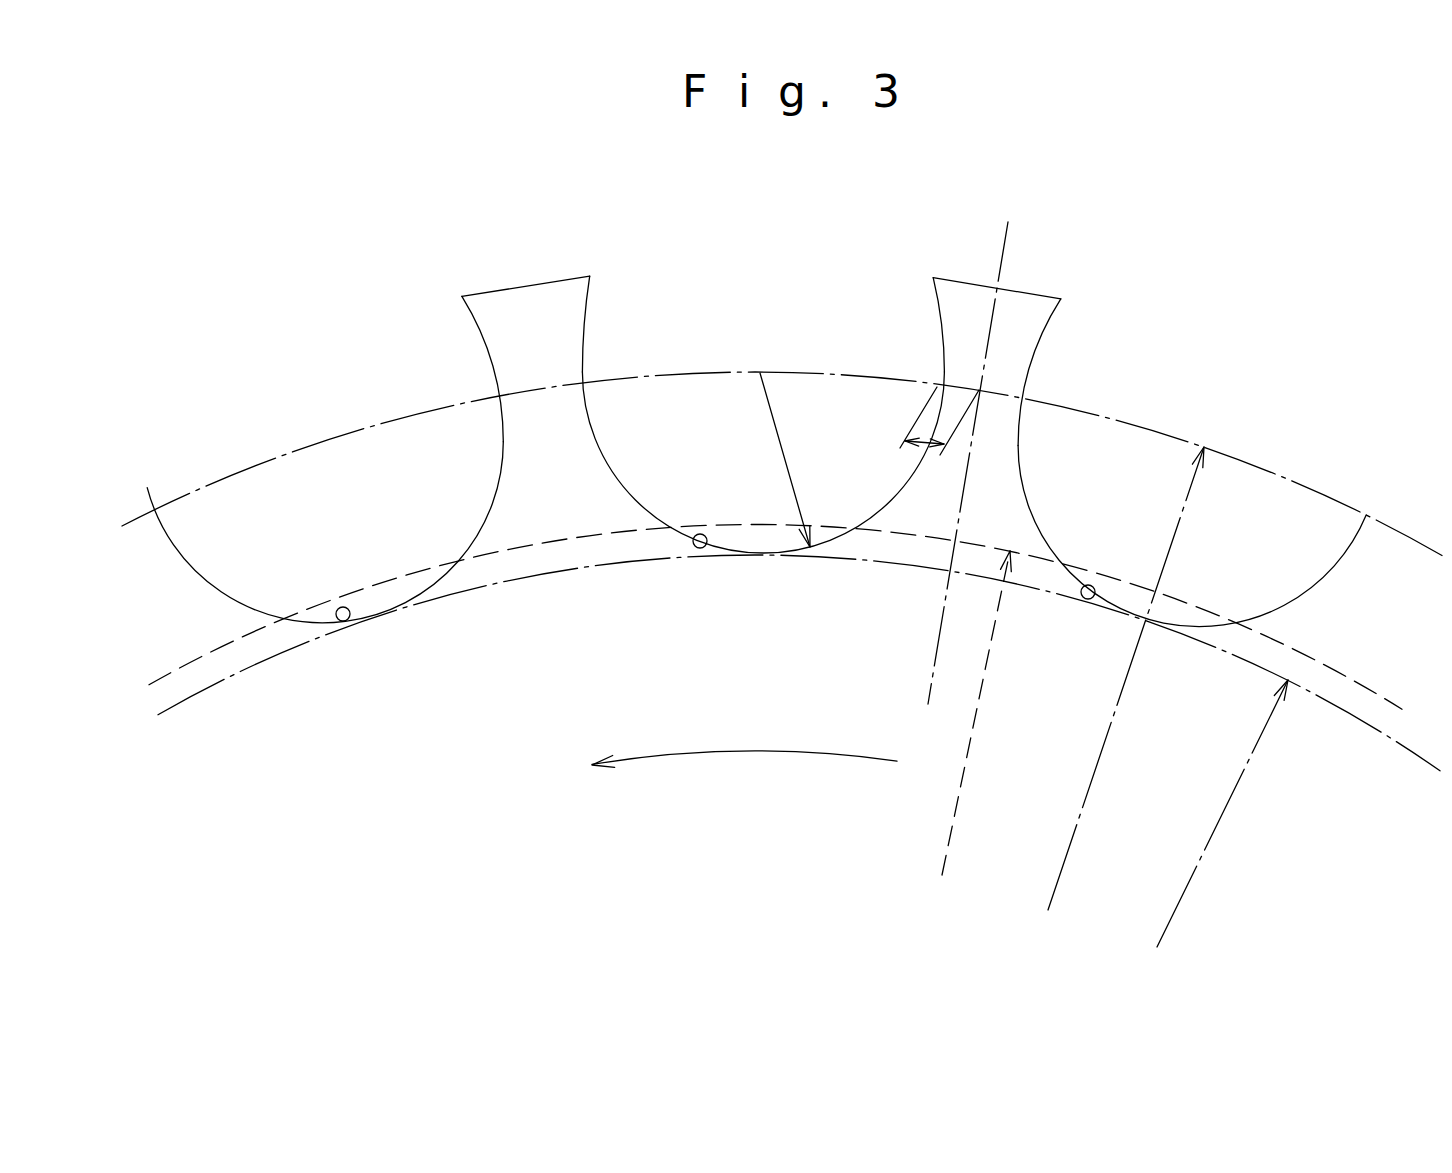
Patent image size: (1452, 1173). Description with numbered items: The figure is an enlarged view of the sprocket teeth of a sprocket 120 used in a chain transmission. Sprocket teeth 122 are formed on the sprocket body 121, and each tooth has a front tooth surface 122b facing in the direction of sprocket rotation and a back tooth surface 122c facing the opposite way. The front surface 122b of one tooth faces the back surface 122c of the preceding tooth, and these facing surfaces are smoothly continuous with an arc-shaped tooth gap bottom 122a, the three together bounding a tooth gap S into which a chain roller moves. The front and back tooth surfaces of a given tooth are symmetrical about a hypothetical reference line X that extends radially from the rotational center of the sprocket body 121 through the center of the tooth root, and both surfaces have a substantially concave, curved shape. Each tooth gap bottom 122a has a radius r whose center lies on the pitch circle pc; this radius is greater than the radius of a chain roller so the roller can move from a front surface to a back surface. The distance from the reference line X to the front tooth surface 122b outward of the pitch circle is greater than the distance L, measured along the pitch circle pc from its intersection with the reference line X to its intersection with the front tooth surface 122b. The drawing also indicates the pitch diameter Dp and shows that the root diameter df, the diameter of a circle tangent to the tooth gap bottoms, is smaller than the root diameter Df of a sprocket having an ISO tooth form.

The sprocket 120 is at (1235, 258).
The sprocket body 121 is at (498, 795).
The sprocket tooth 122 is at (756, 328).
The tooth gap bottom 122a is at (350, 618).
The front tooth surface 122b is at (478, 336).
The back tooth surface 122c is at (588, 314).
The tooth gap S is at (248, 504).
The hypothetical reference line X is at (975, 447).
The distance L is at (917, 443).
The radius of the tooth gap bottom r is at (783, 452).
The pitch circle pc is at (1273, 467).
The root diameter of an ISO tooth form sprocket Df is at (969, 732).
The pitch circle diameter Dp is at (1115, 699).
The root diameter df is at (1210, 833).